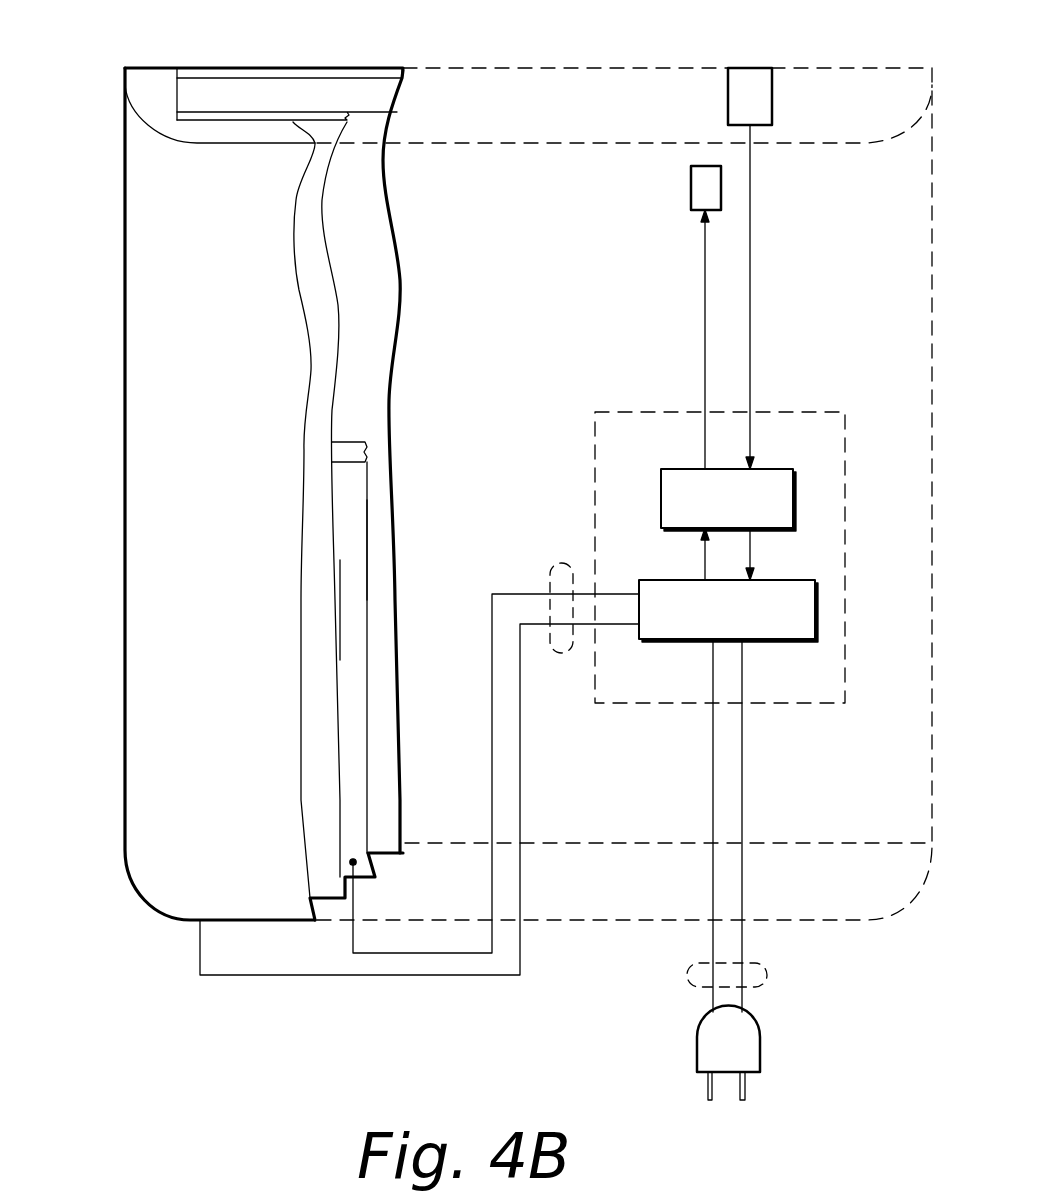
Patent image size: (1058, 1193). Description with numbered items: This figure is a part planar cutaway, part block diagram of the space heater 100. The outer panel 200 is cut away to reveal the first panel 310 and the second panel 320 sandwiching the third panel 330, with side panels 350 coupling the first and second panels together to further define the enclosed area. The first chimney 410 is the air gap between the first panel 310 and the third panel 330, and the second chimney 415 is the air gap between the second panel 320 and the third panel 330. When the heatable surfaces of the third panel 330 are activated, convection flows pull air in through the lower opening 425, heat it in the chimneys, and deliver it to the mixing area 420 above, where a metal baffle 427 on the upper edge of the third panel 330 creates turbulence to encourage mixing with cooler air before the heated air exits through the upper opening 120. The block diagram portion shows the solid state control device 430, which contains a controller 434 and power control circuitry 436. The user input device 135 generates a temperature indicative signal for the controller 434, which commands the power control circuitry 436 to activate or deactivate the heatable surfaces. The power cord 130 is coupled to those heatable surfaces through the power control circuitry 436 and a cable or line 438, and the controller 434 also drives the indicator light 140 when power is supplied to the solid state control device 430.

The space heater 100 is at (477, 1079).
The upper opening 120 is at (359, 51).
The power cord 130 is at (767, 975).
The user input device 135 is at (772, 97).
The indicator light 140 is at (690, 180).
The outer panel 200 is at (152, 190).
The first panel 310 is at (200, 117).
The second panel 320 is at (377, 70).
The third panel 330 is at (350, 498).
The side panel 350 is at (177, 88).
The first chimney 410 is at (352, 604).
The second chimney 415 is at (374, 544).
The mixing area 420 is at (374, 214).
The lower opening 425 is at (388, 870).
The metal baffle 427 is at (345, 452).
The solid state control device 430 is at (830, 412).
The controller 434 is at (672, 469).
The power control circuitry 436 is at (672, 639).
The cable or line 438 is at (558, 565).